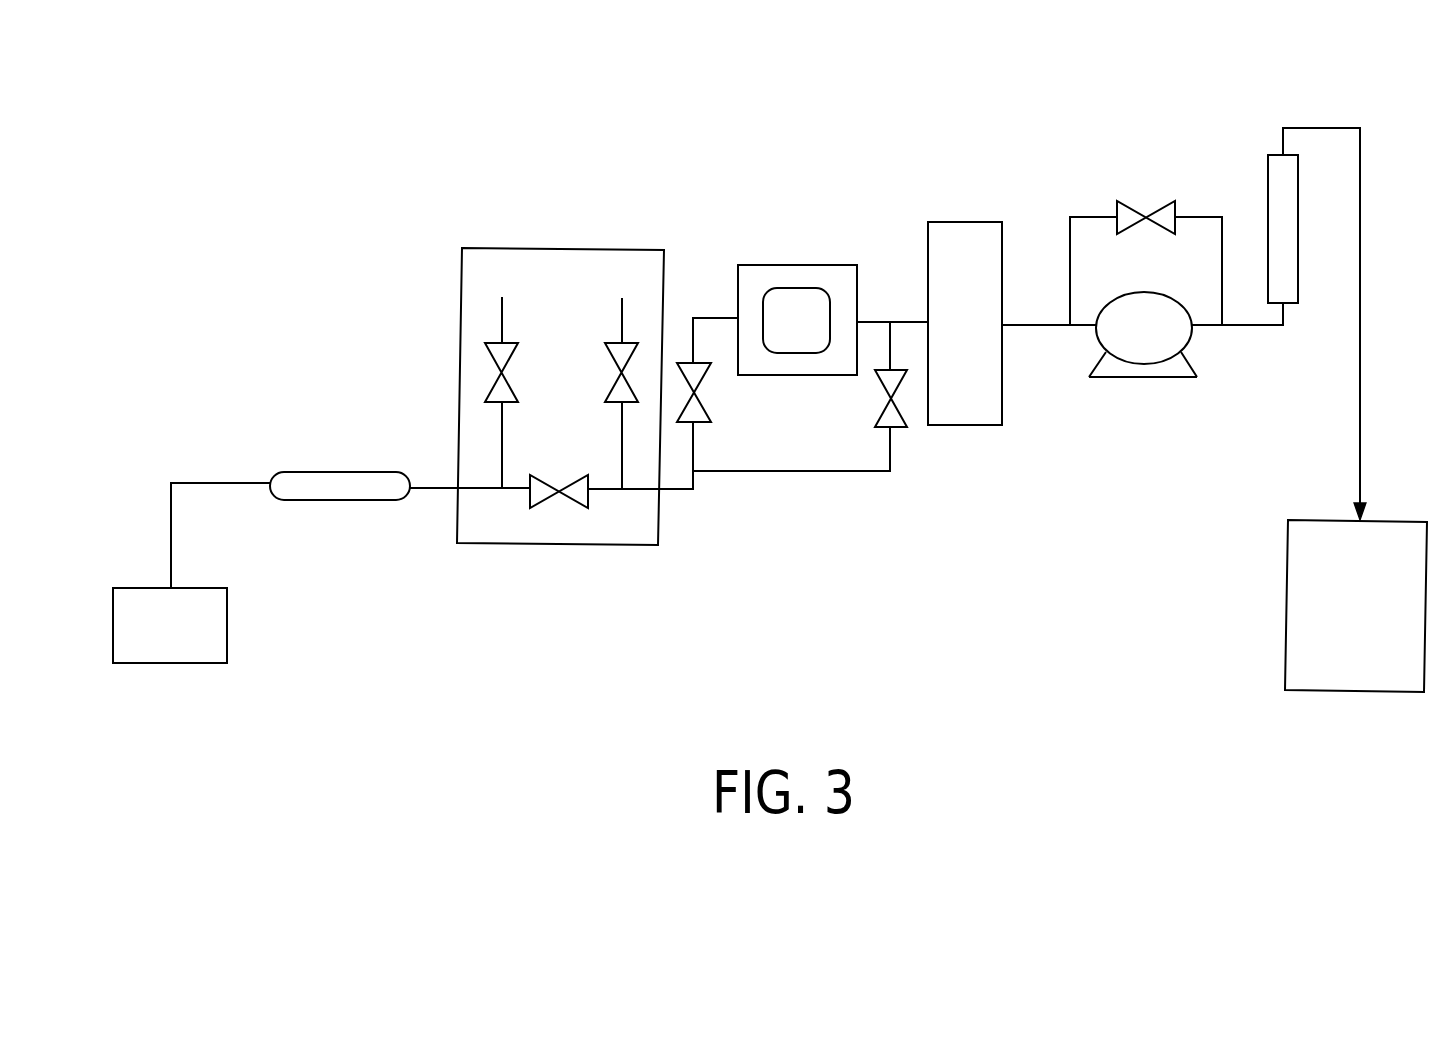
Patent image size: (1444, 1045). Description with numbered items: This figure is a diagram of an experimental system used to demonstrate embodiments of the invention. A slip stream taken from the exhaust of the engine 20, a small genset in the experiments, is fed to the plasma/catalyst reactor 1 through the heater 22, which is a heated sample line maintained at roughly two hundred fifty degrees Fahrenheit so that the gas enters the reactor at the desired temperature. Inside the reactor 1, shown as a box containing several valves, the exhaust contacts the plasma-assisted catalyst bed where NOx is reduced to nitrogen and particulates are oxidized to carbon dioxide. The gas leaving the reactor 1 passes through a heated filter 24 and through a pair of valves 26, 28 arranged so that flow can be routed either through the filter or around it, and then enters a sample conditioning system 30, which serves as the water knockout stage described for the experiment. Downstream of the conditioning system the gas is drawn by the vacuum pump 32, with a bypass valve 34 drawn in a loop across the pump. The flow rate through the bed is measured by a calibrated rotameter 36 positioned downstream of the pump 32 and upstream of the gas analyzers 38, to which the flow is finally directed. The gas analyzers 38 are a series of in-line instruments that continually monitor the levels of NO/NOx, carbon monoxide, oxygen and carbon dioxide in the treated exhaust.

The plasma/catalyst reactor 1 is at (623, 545).
The engine 20 is at (227, 626).
The heater 22 is at (345, 500).
The heated filter 24 is at (738, 288).
The valve 26 is at (707, 425).
The valve 28 is at (875, 427).
The sample conditioning system 30 is at (970, 425).
The pump 32 is at (1197, 365).
The valve 34 is at (1163, 205).
The rotameter 36 is at (1268, 177).
The gas analyzers 38 is at (1287, 608).